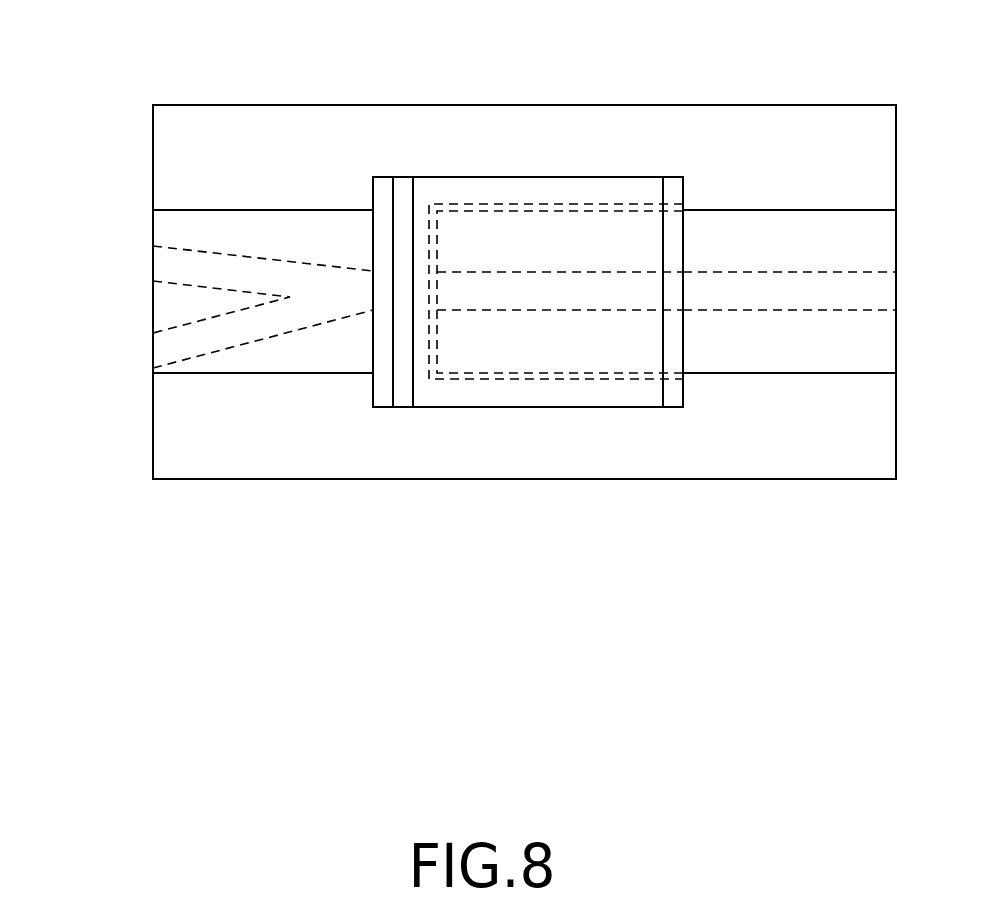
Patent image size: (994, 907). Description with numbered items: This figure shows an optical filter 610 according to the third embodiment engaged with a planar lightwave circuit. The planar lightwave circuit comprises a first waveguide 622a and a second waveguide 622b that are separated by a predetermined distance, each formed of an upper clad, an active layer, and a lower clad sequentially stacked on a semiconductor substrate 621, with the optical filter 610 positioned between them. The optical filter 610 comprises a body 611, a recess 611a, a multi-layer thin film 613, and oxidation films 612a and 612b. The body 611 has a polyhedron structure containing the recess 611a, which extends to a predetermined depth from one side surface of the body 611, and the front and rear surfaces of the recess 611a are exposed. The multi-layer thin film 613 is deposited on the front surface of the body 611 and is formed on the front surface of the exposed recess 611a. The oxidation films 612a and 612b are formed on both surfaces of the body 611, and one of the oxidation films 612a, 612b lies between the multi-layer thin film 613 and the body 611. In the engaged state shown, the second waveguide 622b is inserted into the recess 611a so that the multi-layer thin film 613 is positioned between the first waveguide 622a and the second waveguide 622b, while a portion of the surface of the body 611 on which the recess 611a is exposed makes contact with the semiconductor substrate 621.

The optical filter 610 is at (530, 168).
The body 611 is at (583, 390).
The recess 611a is at (475, 210).
The oxidation film 612a is at (403, 188).
The oxidation film 612b is at (675, 190).
The multi-layer thin film 613 is at (388, 390).
The semiconductor substrate 621 is at (833, 458).
The first waveguide 622a is at (167, 232).
The second waveguide 622b is at (777, 223).